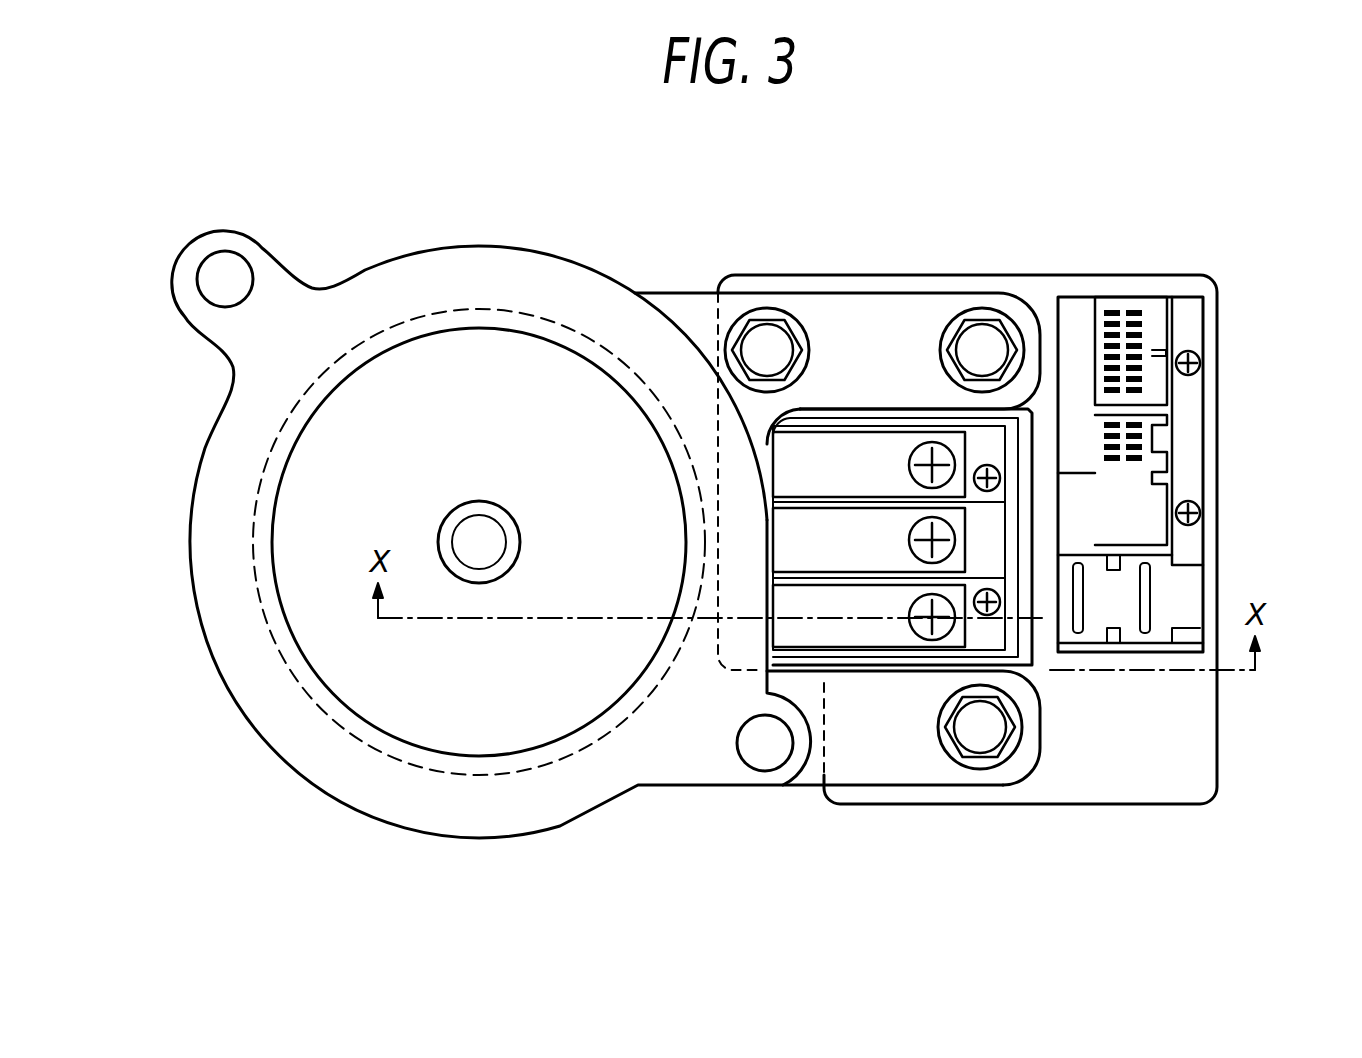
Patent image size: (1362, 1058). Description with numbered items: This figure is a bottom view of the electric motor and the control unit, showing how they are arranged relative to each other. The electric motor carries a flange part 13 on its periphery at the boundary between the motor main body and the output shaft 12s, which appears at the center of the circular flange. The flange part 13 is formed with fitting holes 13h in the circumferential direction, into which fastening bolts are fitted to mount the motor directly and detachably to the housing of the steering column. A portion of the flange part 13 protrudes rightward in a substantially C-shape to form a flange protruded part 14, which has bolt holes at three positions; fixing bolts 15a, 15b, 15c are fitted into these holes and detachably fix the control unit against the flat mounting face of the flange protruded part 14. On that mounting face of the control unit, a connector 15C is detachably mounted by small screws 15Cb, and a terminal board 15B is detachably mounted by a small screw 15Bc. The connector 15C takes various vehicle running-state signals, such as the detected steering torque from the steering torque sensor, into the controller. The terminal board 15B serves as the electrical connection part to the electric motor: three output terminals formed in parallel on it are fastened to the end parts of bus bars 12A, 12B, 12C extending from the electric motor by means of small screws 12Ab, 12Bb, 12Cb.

The flange part 13 is at (281, 762).
The fitting holes 13h is at (233, 270).
The output shaft 12s is at (480, 500).
The flange protruded part 14 is at (897, 293).
The fixing bolt 15a is at (768, 323).
The fixing bolt 15b is at (977, 313).
The fixing bolt 15c is at (978, 768).
The terminal board 15B is at (863, 408).
The bus bar 12A is at (793, 448).
The small screw 12Ab is at (908, 462).
The bus bar 12B is at (783, 550).
The small screw 12Bb is at (908, 540).
The bus bar 12C is at (793, 638).
The small screw 12Cb is at (908, 615).
The small screw 15Bc is at (997, 607).
The connector 15C is at (1173, 297).
The small screw 15Cb is at (1200, 360).